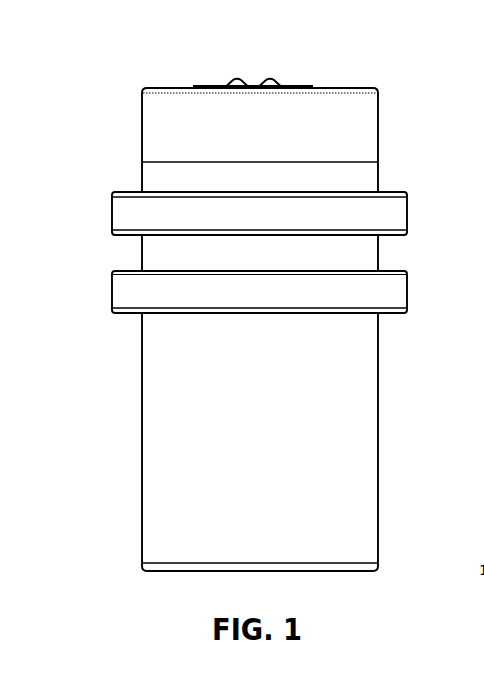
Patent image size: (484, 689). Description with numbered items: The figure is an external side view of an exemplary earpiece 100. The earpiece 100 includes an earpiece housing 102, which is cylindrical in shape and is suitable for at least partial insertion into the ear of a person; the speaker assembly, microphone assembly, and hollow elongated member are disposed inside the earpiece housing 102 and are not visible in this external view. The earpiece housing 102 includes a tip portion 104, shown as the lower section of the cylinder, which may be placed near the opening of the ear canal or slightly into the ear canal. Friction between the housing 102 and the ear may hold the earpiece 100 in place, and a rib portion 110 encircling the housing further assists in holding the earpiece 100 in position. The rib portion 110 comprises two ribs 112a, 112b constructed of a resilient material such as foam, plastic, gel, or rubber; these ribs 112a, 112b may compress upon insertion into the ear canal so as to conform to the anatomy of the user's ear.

The earpiece 100 is at (318, 58).
The earpiece housing 102 is at (378, 144).
The tip portion 104 is at (98, 320).
The rib portion 110 is at (98, 193).
The rib 112a is at (402, 193).
The rib 112b is at (402, 271).